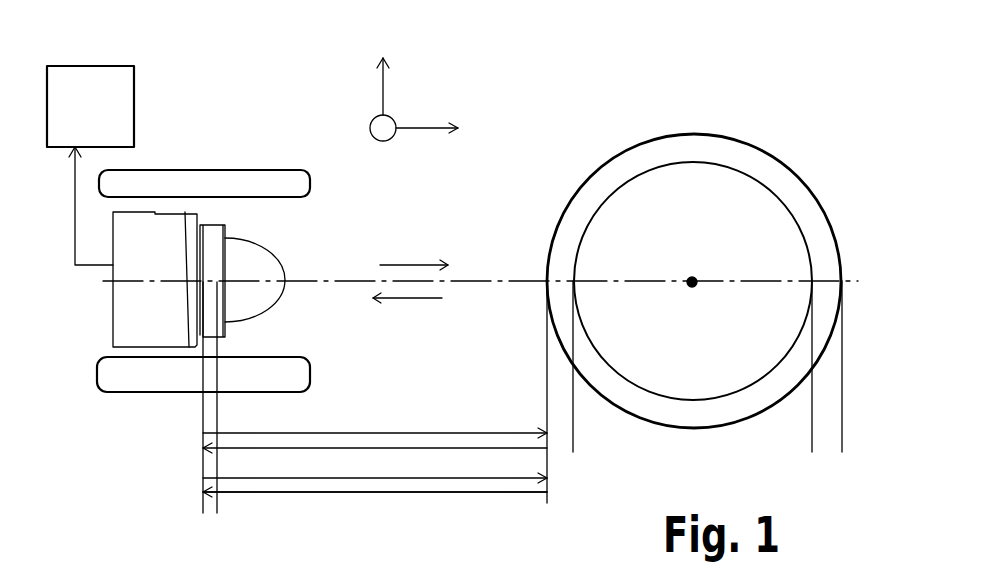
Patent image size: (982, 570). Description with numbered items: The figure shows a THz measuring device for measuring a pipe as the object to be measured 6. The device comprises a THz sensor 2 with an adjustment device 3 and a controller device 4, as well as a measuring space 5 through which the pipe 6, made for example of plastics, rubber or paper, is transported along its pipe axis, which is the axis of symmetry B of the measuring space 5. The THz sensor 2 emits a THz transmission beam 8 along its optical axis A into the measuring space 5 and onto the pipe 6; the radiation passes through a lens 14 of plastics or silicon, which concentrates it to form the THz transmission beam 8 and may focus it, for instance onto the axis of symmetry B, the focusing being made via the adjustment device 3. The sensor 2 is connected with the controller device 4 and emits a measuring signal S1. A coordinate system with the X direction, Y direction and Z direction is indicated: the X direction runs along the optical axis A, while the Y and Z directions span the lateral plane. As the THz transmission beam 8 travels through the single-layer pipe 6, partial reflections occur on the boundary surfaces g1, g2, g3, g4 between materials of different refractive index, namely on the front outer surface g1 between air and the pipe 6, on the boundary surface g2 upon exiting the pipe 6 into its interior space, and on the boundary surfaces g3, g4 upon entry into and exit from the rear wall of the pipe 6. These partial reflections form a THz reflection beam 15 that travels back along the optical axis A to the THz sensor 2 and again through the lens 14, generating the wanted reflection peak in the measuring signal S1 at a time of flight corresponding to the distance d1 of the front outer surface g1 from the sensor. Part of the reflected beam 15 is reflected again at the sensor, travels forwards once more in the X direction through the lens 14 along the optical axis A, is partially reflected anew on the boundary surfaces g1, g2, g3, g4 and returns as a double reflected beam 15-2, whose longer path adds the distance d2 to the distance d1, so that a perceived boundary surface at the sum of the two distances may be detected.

The THz sensor 2 is at (93, 425).
The adjustment device 3 is at (217, 183).
The controller device 4 is at (117, 90).
The measuring space 5 is at (788, 105).
The object to be measured 6 is at (637, 165).
The THz transmission beam 8 is at (411, 263).
The lens 14 is at (277, 263).
The THz reflection beam 15 is at (413, 302).
The double reflected beam 15-2 is at (375, 518).
The measuring signal S1 is at (77, 227).
The optical axis A is at (490, 280).
The axis of symmetry B is at (690, 290).
The X direction X is at (429, 110).
The Y direction Y is at (366, 79).
The Z direction Z is at (366, 134).
The front outer surface g1 is at (547, 265).
The boundary surface g2 is at (578, 263).
The boundary surface g3 is at (800, 267).
The boundary surface g4 is at (843, 268).
The distance d1 is at (375, 424).
The distance d2 is at (375, 503).